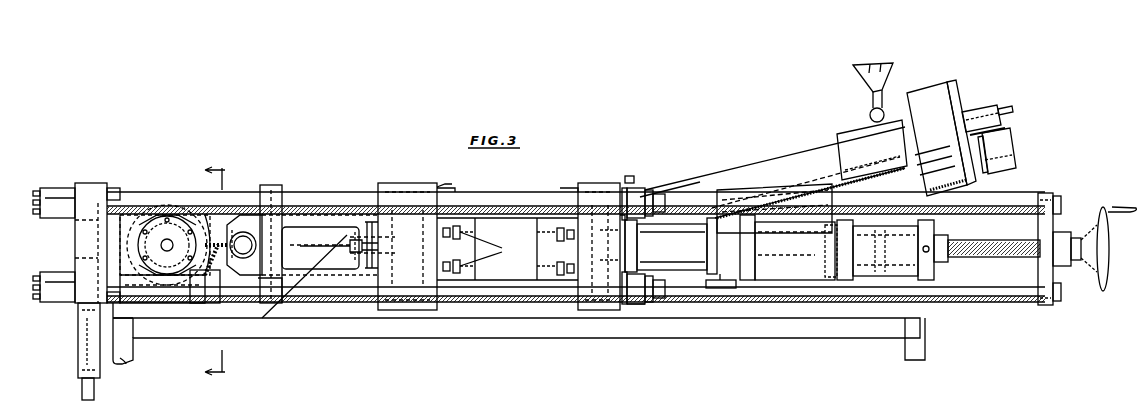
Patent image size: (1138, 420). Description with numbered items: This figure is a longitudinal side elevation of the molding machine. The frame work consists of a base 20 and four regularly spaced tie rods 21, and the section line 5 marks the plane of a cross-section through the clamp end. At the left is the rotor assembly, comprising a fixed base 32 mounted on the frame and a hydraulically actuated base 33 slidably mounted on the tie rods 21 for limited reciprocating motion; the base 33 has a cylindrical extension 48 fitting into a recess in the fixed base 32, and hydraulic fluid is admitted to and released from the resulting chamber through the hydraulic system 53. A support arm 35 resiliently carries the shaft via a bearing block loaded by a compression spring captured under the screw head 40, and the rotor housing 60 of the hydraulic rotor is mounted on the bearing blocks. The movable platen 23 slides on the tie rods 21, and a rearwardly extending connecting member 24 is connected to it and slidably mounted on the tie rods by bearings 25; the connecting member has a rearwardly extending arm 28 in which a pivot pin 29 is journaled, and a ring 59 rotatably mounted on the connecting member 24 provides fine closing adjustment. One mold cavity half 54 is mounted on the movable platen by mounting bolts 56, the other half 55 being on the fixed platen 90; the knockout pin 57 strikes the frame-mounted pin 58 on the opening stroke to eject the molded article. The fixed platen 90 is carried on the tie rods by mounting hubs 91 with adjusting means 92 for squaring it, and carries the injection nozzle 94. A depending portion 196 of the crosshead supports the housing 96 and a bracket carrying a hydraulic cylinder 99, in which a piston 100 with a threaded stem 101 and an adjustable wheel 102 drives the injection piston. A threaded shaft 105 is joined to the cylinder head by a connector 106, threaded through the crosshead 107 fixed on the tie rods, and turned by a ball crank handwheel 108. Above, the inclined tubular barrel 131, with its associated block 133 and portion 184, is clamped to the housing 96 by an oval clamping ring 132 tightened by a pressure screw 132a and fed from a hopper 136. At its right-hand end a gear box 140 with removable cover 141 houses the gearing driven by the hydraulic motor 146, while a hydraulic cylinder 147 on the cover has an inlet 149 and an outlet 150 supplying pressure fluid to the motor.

The section line 5- 5 is at (215, 270).
The base 20 is at (510, 328).
The tie rods 21 is at (312, 192).
The movable platen 23 is at (388, 183).
The connecting member 24 is at (330, 218).
The bearings 25 is at (271, 185).
The arm 28 is at (249, 218).
The pivot pin 29 is at (256, 245).
The fixed base 32 is at (92, 183).
The hydraulically actuated base 33 is at (114, 188).
The support arm 35 is at (135, 215).
The screw head 40 is at (220, 285).
The cylindrical extension 48 is at (100, 231).
The hydraulic system 53 is at (80, 333).
The mold cavity half 54 is at (475, 227).
The mold cavity half 55 is at (537, 227).
The mounting bolts 56 is at (490, 261).
The knockout pin 57 is at (481, 251).
The pin 58 is at (407, 250).
The ring 59 is at (392, 262).
The rotor housing 60 is at (163, 287).
The fixed platen 90 is at (595, 183).
The mounting hubs 91 is at (623, 303).
The adjusting means 92 is at (640, 303).
The injection nozzle 94 is at (604, 260).
The housing 96 is at (687, 247).
The hydraulic cylinder 99 is at (910, 237).
The piston 100 is at (908, 252).
The stem 101 is at (805, 252).
The adjustable wheel 102 is at (800, 233).
The threaded shaft 105 is at (985, 255).
The connector 106 is at (948, 256).
The crosshead 107 is at (1043, 305).
The ball crank handwheel 108 is at (1100, 285).
The tubular barrel 131 is at (806, 152).
The clamping ring 132 is at (650, 188).
The pressure screw 132a is at (632, 176).
The tube flange 133 is at (872, 156).
The hopper 136 is at (852, 71).
The gear box 140 is at (914, 95).
The removable cover 141 is at (955, 92).
The hydraulic motor 146 is at (1012, 146).
The hydraulic cylinder 147 is at (985, 108).
The inlet 149 is at (1013, 109).
The outlet 150 is at (1005, 130).
The heater block 184 is at (768, 195).
The depending portion 196 is at (728, 290).